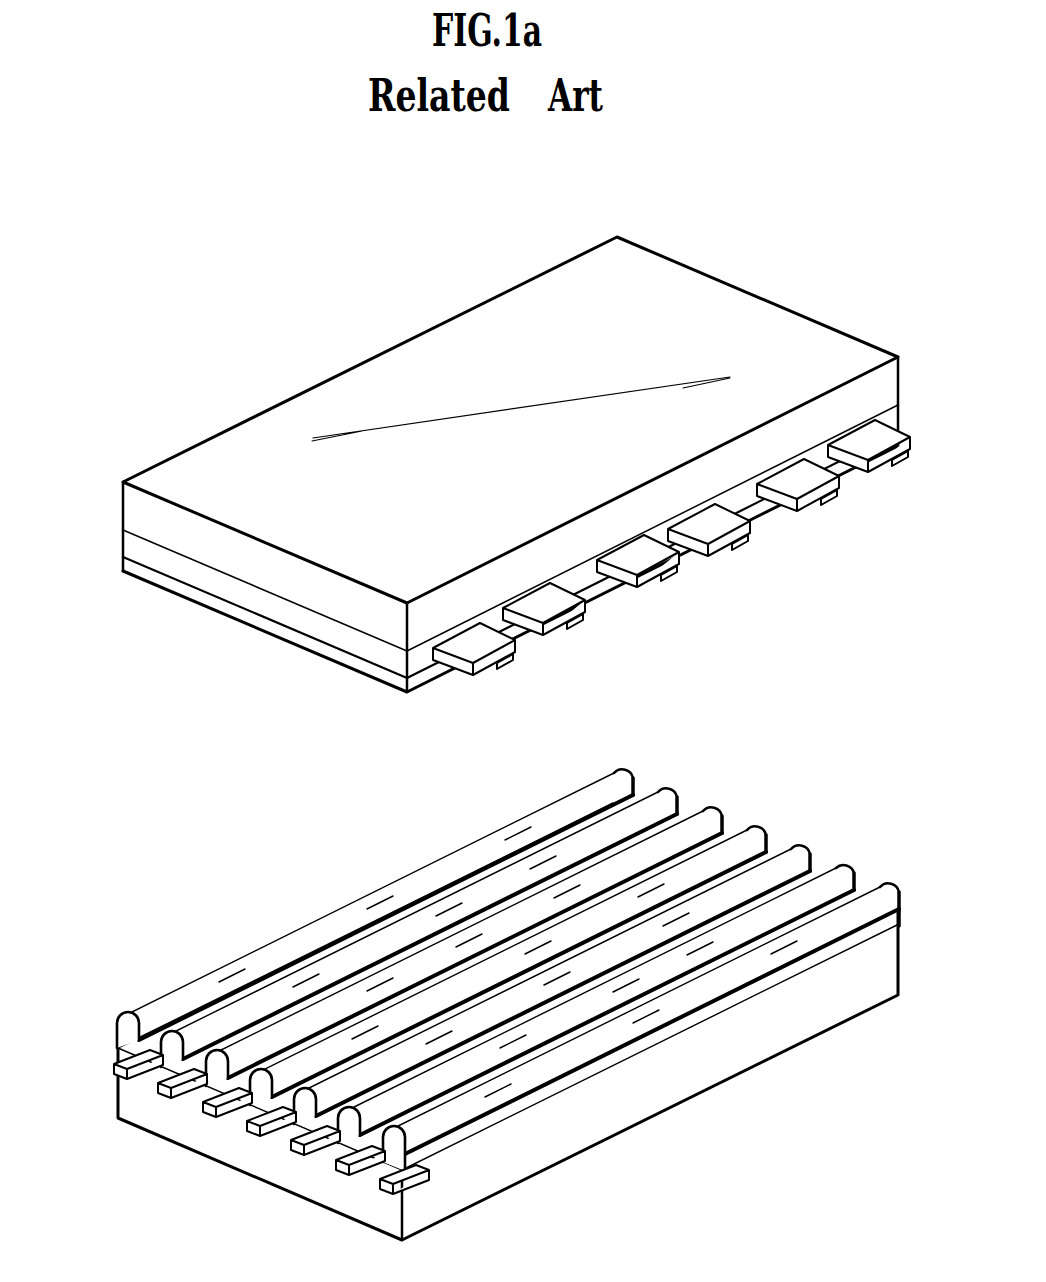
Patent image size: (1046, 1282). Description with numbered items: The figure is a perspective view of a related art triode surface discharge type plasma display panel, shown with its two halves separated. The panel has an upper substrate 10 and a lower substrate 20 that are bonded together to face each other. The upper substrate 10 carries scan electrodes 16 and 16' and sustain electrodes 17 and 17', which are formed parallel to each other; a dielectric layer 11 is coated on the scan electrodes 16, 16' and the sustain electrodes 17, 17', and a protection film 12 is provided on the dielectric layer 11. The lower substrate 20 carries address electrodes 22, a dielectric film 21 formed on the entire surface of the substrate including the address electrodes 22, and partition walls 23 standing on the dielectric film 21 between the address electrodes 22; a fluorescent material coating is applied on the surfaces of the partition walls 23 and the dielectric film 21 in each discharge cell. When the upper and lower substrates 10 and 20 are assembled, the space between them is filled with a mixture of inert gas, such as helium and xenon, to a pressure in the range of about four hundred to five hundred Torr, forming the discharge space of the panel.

The upper substrate 10 is at (428, 352).
The dielectric layer 11 is at (137, 545).
The protection film 12 is at (137, 568).
The scan electrode 16 is at (666, 582).
The scan electrode 16' is at (684, 612).
The sustain electrode 17 is at (730, 555).
The sustain electrode 17' is at (796, 552).
The lower substrate 20 is at (663, 1085).
The dielectric film 21 is at (327, 1127).
The address electrode 22 is at (250, 1127).
The partition wall 23 is at (377, 943).